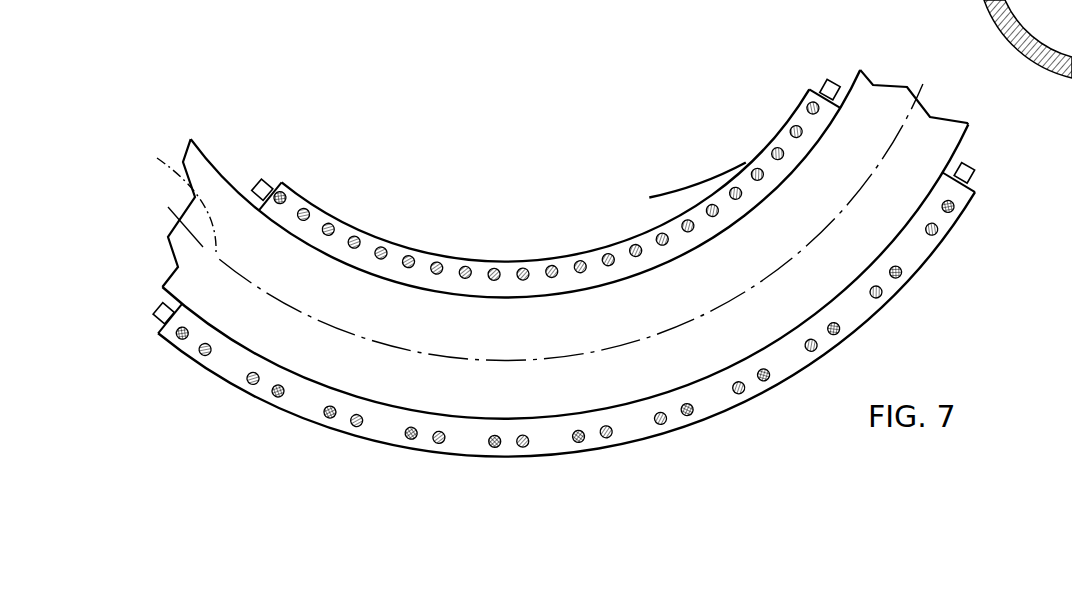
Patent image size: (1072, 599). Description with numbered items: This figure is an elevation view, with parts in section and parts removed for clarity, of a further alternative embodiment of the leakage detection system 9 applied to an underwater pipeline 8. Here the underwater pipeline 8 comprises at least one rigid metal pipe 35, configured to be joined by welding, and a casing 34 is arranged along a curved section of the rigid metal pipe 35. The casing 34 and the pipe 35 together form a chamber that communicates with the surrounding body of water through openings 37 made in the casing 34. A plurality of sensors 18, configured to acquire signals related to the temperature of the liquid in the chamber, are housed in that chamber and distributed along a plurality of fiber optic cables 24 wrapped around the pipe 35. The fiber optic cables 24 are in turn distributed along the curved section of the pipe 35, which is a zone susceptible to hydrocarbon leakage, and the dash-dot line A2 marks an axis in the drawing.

The underwater pipeline 8 is at (179, 114).
The leakage detection system 9 is at (255, 409).
The sensors 18 is at (317, 199).
The fiber optic cables 24 is at (280, 193).
The casing 34 is at (697, 211).
The rigid metal pipe 35 is at (890, 115).
The openings 37 is at (257, 176).
The axis A2 is at (178, 191).